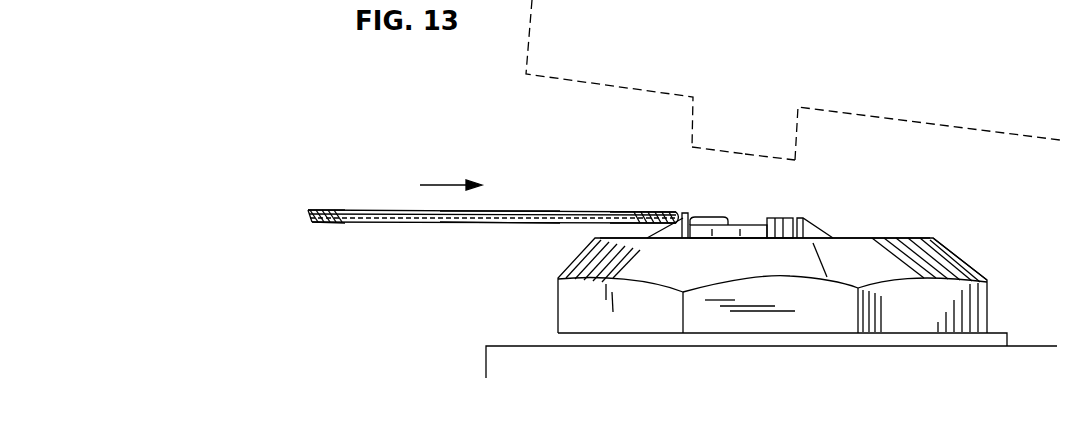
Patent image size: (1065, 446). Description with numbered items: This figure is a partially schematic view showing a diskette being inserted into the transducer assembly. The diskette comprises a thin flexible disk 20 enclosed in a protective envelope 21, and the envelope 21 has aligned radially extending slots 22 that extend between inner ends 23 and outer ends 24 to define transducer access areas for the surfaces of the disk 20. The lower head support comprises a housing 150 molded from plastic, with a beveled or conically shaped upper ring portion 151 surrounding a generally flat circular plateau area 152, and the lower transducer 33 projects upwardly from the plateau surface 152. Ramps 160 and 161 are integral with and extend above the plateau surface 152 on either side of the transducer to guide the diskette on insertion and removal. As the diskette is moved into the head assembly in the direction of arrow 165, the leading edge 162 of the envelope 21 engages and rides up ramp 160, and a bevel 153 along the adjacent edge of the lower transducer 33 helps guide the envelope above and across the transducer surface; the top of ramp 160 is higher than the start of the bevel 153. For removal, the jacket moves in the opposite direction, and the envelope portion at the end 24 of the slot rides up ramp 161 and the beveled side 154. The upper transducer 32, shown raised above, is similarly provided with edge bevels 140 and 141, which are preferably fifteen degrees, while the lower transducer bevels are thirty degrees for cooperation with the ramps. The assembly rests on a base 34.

The disk 20 is at (390, 214).
The envelope 21 is at (323, 224).
The radially extending slots 22 is at (497, 208).
The inner ends 23 is at (349, 208).
The outer ends 24 is at (634, 211).
The upper transducer 32 is at (793, 80).
The lower transducer 33 is at (790, 210).
The base plate 34 is at (476, 361).
The edge bevel 140 is at (690, 152).
The edge bevel 141 is at (797, 160).
The housing 150 is at (799, 273).
The upper ring portion 151 is at (967, 252).
The plateau area 152 is at (905, 238).
The bevel 153 is at (693, 217).
The beveled edge 154 is at (788, 213).
The ramp 160 is at (675, 240).
The ramp 161 is at (813, 243).
The leading edge 162 is at (683, 213).
The arrow 165 is at (441, 183).